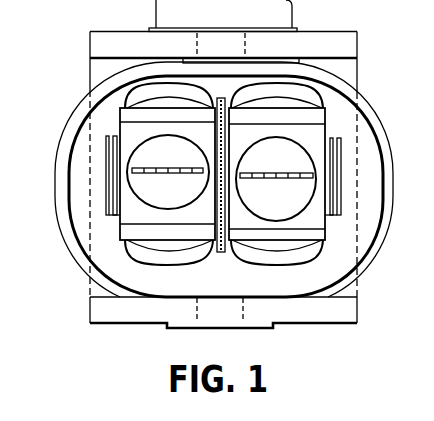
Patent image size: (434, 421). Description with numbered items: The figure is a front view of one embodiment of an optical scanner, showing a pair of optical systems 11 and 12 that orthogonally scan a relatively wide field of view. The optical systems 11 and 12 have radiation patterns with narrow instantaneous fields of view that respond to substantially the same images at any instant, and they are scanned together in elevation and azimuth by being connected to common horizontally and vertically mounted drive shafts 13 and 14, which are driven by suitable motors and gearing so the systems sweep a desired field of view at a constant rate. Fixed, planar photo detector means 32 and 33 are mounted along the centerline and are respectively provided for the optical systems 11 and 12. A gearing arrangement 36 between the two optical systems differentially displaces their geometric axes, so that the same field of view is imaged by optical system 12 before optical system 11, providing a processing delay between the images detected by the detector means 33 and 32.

The optical system 11 is at (132, 208).
The optical system 12 is at (311, 155).
The drive shaft 13 is at (344, 168).
The drive shaft 14 is at (259, 60).
The planar photo detector means 32 is at (139, 159).
The planar photo detector means 33 is at (307, 189).
The gearing arrangement 36 is at (221, 252).